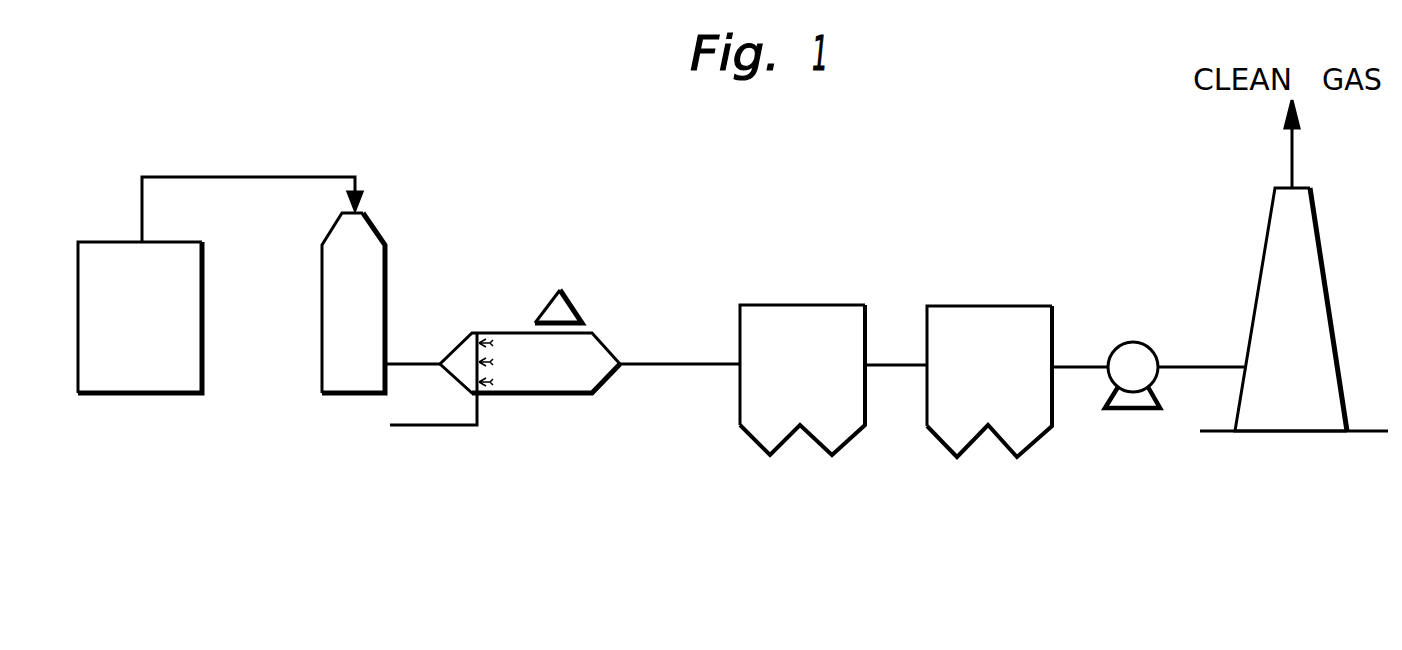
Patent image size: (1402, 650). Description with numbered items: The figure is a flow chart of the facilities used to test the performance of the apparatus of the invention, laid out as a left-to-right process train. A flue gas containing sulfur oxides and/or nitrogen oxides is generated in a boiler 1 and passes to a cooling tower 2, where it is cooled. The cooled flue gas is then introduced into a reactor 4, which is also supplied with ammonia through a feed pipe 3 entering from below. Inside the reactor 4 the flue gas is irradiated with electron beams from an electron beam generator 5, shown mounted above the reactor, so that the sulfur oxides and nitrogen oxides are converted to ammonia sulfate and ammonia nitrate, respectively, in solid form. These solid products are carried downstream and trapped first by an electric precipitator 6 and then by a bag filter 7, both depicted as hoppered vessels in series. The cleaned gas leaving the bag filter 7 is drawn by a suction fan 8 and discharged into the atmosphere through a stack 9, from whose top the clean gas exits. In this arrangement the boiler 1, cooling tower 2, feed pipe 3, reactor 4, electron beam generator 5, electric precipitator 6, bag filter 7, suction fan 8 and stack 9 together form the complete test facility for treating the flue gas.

The boiler 1 is at (129, 396).
The cooling tower 2 is at (317, 384).
The feed pipe 3 is at (460, 426).
The reactor 4 is at (568, 400).
The electron beam generator 5 is at (565, 307).
The electric precipitator 6 is at (763, 450).
The bag filter 7 is at (1037, 442).
The suction fan 8 is at (1160, 382).
The stack 9 is at (1332, 327).